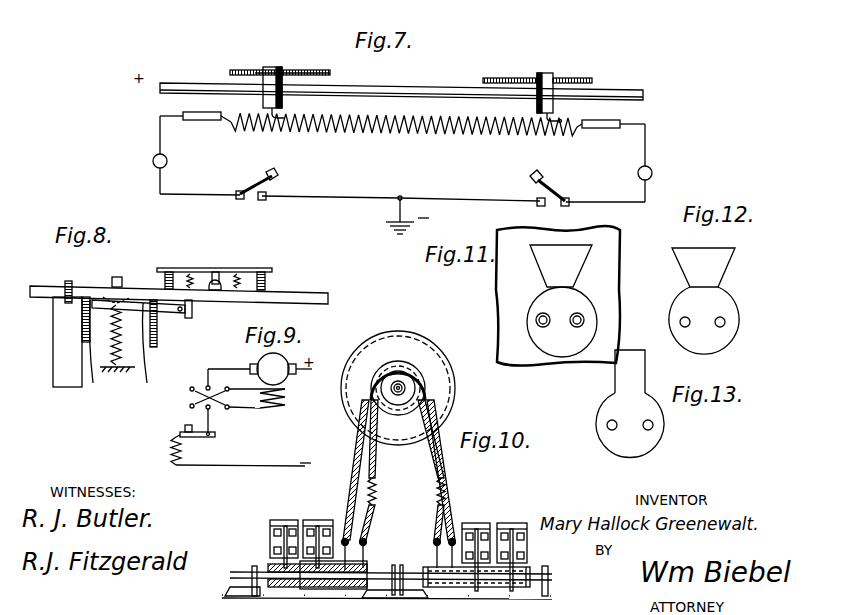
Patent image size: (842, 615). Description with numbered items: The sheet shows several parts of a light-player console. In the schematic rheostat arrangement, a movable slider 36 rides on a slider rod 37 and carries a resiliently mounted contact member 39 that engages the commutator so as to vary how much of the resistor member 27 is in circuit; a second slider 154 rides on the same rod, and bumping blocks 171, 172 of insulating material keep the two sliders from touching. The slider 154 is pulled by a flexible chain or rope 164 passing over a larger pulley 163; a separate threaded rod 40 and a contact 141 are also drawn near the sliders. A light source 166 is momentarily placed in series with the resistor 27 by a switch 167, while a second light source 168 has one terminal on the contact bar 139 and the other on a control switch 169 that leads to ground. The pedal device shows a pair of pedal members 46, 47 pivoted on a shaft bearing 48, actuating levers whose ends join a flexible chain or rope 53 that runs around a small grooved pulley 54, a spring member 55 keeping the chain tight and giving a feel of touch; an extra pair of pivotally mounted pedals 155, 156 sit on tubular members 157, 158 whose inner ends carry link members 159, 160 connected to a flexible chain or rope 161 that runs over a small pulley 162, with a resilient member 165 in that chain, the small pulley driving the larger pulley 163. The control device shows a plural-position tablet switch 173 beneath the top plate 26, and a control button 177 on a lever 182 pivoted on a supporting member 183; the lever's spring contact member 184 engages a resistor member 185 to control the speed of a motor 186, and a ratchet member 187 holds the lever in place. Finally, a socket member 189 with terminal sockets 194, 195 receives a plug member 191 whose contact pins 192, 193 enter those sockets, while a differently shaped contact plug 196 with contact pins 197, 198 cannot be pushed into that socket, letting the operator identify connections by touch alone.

In FIG. 8, the top plate 26 is at (292, 294).
In FIG. 7, the resistor member 27 is at (392, 134).
In FIG. 7, the movable slider 36 is at (548, 72).
In FIG. 7, the slider rod 37 is at (402, 90).
In FIG. 7, the resiliently mounted contact member 39 is at (557, 116).
In FIG. 7, the threaded rod 40 is at (517, 77).
In FIG. 10, the pedal member 46 is at (318, 520).
In FIG. 10, the pedal member 47 is at (470, 523).
In FIG. 10, the shaft bearing 48 is at (251, 576).
In FIG. 10, the flexible chain or rope 53 is at (358, 452).
In FIG. 10, the small grooved pulley 54 is at (428, 378).
In FIG. 10, the spring member 55 is at (443, 484).
In FIG. 7, the contact bar 139 is at (212, 121).
In FIG. 7, the resistance 141 is at (595, 128).
In FIG. 7, the second slider 154 is at (277, 66).
In FIG. 10, the pivotally mounted pedal 155 is at (284, 522).
In FIG. 10, the pivotally mounted pedal 156 is at (510, 523).
In FIG. 10, the tubular member 157 is at (274, 566).
In FIG. 10, the tubular member 158 is at (521, 568).
In FIG. 10, the link member 159 is at (364, 545).
In FIG. 10, the link member 160 is at (466, 569).
In FIG. 10, the flexible chain or rope 161 is at (436, 520).
In FIG. 10, the small pulley 162 is at (394, 381).
In FIG. 10, the larger pulley 163 is at (417, 338).
In FIG. 7, the flexible chain or rope 164 is at (249, 70).
In FIG. 10, the resilient member 165 is at (378, 485).
In FIG. 7, the light source 166 is at (652, 171).
In FIG. 7, the switch 167 is at (553, 195).
In FIG. 7, the second light source 168 is at (153, 162).
In FIG. 7, the control switch 169 is at (252, 198).
In FIG. 7, the bumping block 171 is at (283, 102).
In FIG. 7, the bumping block 172 is at (537, 103).
In FIG. 8, the plural-position tablet switch 173 is at (178, 272).
In FIG. 9, the plural-position tablet switch 173 is at (197, 400).
In FIG. 8, the manually operable control button 177 is at (117, 277).
In FIG. 9, the manually operable control button 177 is at (188, 425).
In FIG. 8, the lever 182 is at (120, 370).
In FIG. 9, the lever 182 is at (205, 438).
In FIG. 8, the supporting member 183 is at (193, 314).
In FIG. 8, the spring contact member 184 is at (115, 368).
In FIG. 8, the resistor member 185 is at (83, 318).
In FIG. 9, the resistor member 185 is at (171, 451).
In FIG. 8, the motor 186 is at (117, 378).
In FIG. 9, the motor 186 is at (284, 380).
In FIG. 8, the ratchet member 187 is at (158, 326).
In FIG. 11, the socket member 189 is at (586, 302).
In FIG. 12, the plug member 191 is at (720, 306).
In FIG. 12, the contact pin 192 is at (689, 326).
In FIG. 12, the contact pin 193 is at (726, 328).
In FIG. 11, the terminal socket 194 is at (543, 328).
In FIG. 11, the terminal socket 195 is at (577, 328).
In FIG. 13, the contact plug 196 is at (661, 433).
In FIG. 13, the contact pin 197 is at (611, 431).
In FIG. 13, the contact pin 198 is at (648, 431).